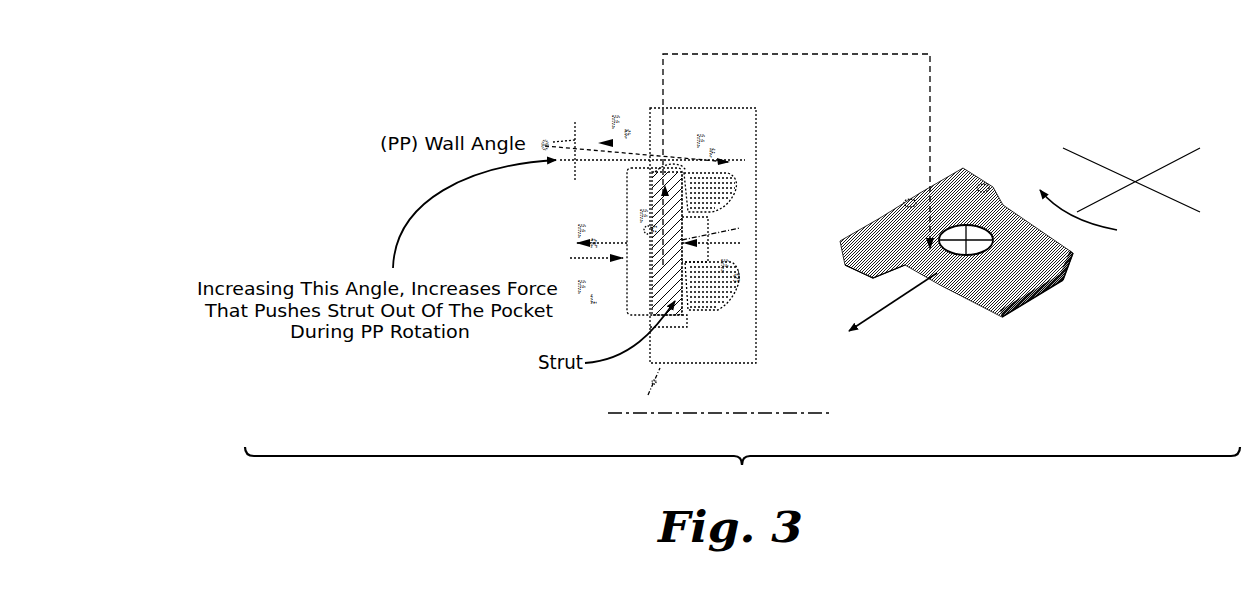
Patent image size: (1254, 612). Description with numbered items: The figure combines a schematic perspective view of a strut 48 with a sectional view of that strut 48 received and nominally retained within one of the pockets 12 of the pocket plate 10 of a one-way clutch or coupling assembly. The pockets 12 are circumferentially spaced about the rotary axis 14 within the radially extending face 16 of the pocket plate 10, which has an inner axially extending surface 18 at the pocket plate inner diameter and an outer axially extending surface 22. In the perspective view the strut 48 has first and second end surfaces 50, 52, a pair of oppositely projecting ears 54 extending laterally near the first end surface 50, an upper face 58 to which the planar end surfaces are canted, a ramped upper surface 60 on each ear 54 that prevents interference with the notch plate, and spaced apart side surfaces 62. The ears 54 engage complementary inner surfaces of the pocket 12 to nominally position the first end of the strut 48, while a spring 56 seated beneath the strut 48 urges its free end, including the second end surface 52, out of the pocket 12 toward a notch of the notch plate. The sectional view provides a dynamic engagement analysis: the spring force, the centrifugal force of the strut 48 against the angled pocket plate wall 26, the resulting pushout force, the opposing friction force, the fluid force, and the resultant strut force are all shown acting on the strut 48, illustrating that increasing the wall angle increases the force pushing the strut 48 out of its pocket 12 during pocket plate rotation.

The pocket plate 10 is at (772, 167).
The pocket 12 is at (670, 336).
The rotary axis 14 is at (815, 412).
The radially extending face 16 is at (650, 118).
The inner axially extending surface 18 is at (727, 365).
The outer axially extending surface 22 is at (675, 108).
The pocket plate wall 26 is at (670, 158).
The strut 48 is at (1010, 214).
The first end surface 50 is at (908, 200).
The second end surface 52 is at (1027, 298).
The ears 54 is at (972, 182).
The spring 56 is at (730, 300).
The upper face 58 is at (1052, 288).
The ramped upper surface 60 is at (983, 187).
The side surfaces 62 is at (652, 172).